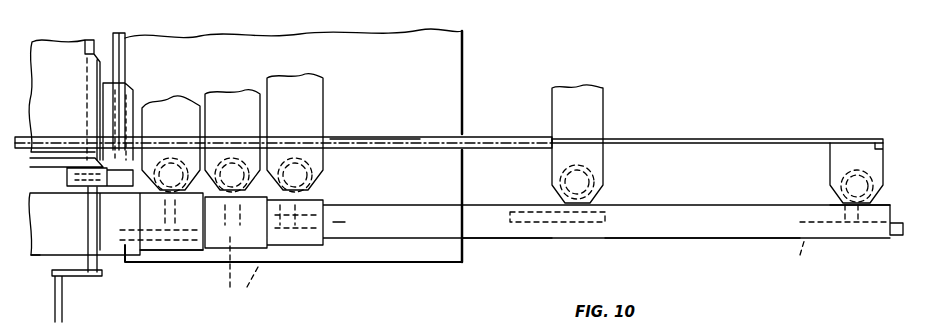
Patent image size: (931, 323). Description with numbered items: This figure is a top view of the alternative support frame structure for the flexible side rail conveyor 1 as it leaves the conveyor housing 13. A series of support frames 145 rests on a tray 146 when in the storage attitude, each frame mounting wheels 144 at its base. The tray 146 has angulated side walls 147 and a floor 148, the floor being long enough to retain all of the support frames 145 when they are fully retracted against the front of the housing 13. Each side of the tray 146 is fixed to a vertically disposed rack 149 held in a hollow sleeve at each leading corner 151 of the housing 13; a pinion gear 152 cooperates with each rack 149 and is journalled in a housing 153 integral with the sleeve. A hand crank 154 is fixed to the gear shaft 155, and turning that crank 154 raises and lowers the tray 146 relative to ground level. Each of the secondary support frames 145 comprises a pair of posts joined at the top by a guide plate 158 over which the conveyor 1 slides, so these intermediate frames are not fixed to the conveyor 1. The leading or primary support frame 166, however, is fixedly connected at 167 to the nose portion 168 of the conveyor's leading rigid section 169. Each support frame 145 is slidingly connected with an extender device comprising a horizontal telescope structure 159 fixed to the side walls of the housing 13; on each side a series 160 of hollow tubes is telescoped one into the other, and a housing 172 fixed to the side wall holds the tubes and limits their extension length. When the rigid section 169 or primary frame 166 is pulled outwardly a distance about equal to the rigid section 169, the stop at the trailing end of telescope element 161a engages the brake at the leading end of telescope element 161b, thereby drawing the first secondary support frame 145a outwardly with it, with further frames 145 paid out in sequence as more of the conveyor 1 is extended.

The flexible side rail conveyor 1 is at (17, 130).
The conveyor housing 13 is at (48, 54).
The wheels 144 is at (521, 270).
The support frames 145 is at (325, 180).
The first secondary support frame 145a is at (610, 185).
The tray 146 is at (445, 62).
The angulated side walls 147 is at (356, 258).
The floor 148 is at (293, 52).
The rack 149 is at (150, 108).
The leading corner 151 is at (362, 135).
The pinion gear 152 is at (70, 196).
The housing 153 is at (66, 176).
The hand crank 154 is at (75, 276).
The gear shaft 155 is at (96, 236).
The guide plate 158 is at (290, 92).
The horizontal telescope structure 159 is at (362, 213).
The series of hollow tubes 160 is at (335, 223).
The telescope element 161a is at (752, 240).
The telescope element 161b is at (494, 245).
The primary support frame 166 is at (882, 183).
The fixed connection 167 is at (883, 143).
The nose portion 168 is at (873, 116).
The leading rigid section 169 is at (738, 138).
The housing for telescoping tubes 172 is at (35, 260).